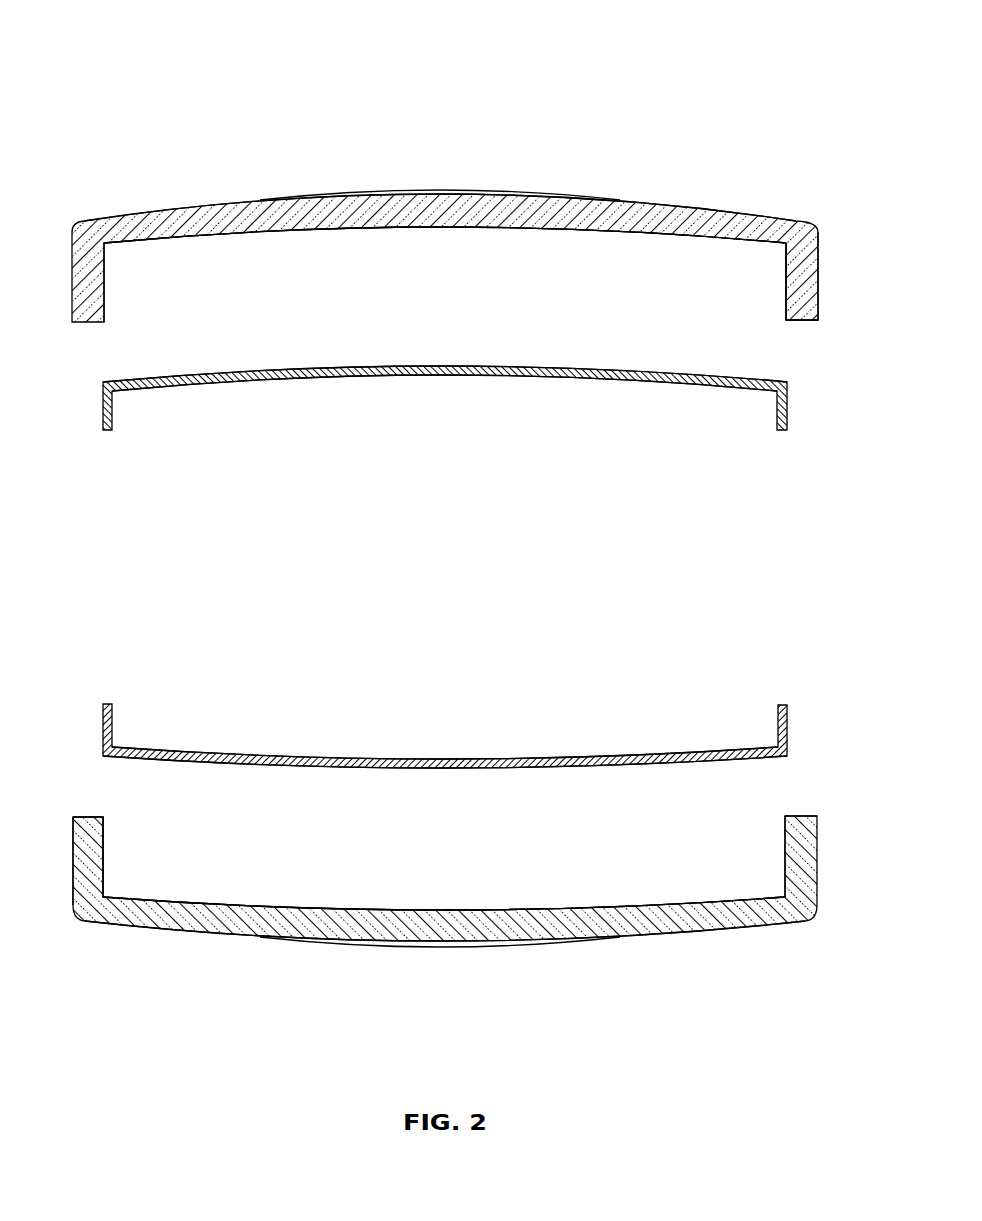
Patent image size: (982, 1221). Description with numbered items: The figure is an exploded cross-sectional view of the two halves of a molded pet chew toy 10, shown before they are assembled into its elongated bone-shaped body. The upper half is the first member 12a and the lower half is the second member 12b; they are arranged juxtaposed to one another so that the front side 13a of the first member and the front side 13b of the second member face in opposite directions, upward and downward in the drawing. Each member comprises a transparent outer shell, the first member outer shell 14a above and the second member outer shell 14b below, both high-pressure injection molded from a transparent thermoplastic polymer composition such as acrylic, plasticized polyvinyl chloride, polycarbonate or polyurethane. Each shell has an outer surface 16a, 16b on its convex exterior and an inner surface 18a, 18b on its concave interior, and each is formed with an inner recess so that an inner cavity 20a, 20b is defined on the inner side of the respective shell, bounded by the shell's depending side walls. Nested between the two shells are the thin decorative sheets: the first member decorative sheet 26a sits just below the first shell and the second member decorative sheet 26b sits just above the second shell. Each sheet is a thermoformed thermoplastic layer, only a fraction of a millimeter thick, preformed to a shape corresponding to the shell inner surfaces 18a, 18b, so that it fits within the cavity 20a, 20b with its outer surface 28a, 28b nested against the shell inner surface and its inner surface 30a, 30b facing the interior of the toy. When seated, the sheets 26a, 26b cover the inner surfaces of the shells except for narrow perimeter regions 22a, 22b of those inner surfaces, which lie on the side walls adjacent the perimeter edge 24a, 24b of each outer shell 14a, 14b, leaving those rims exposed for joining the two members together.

The molded pet chew toy 10 is at (178, 72).
The first member 12a is at (303, 489).
The second member 12b is at (632, 645).
The front side of first member 13a is at (186, 193).
The front side of second member 13b is at (657, 950).
The first member outer shell 14a is at (622, 212).
The second member outer shell 14b is at (275, 917).
The outer surface of first member outer shell 16a is at (368, 196).
The outer surface of second member outer shell 16b is at (463, 942).
The inner surface of first member outer shell 18a is at (500, 230).
The inner surface of second member outer shell 18b is at (398, 908).
The first member inner cavity 20a is at (226, 291).
The second member inner cavity 20b is at (641, 865).
The narrow perimeter region of first shell inner surface 22a is at (790, 305).
The narrow perimeter region of second shell inner surface 22b is at (104, 832).
The perimeter edge of first member outer shell 24a is at (795, 322).
The perimeter edge of second member outer shell 24b is at (793, 815).
The first member decorative sheet 26a is at (525, 417).
The second member decorative sheet 26b is at (369, 729).
The outer surface of first member decorative sheet 28a is at (445, 370).
The outer surface of second member decorative sheet 28b is at (430, 770).
The inner surface of first member decorative sheet 30a is at (362, 378).
The inner surface of second member decorative sheet 30b is at (550, 757).